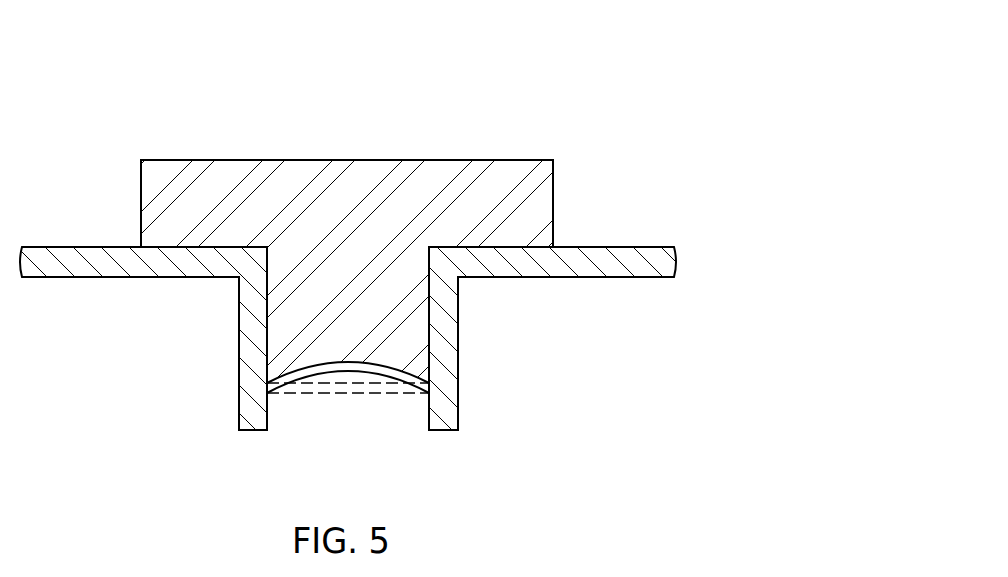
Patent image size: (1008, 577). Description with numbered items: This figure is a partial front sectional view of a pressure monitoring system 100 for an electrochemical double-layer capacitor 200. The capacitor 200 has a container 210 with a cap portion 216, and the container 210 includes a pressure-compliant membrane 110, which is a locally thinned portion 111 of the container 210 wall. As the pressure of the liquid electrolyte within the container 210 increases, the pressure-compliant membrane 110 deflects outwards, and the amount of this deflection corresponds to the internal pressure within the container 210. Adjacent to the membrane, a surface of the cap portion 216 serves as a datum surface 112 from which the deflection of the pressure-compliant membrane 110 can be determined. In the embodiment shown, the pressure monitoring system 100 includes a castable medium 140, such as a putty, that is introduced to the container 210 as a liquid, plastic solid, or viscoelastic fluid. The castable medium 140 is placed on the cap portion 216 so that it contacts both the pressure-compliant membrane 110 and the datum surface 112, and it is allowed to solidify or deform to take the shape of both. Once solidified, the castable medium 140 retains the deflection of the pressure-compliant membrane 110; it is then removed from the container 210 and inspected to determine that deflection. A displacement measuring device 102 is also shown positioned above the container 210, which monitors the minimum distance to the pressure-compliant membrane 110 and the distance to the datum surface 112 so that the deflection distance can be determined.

The pressure monitoring system 100 is at (138, 63).
The displacement measuring device 102 is at (322, 228).
The castable medium 140 is at (346, 159).
The datum surface 112 is at (90, 247).
The cap portion 216 is at (571, 293).
The electrochemical double-layer capacitor 200 is at (427, 352).
The container 210 is at (104, 492).
The pressure-compliant membrane 110 is at (348, 419).
The locally thinned portion 111 is at (288, 394).